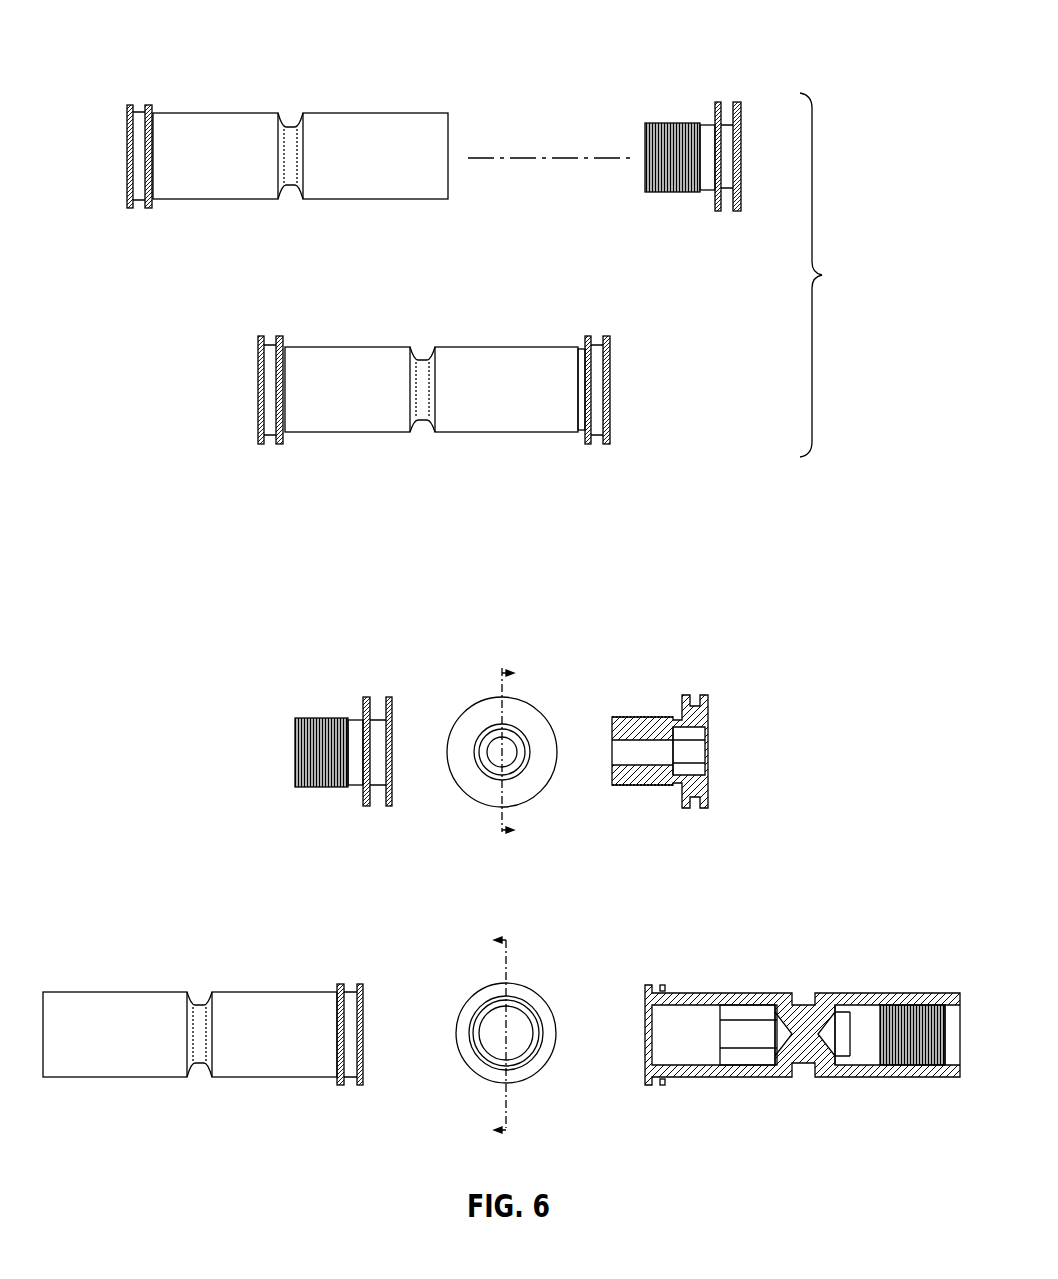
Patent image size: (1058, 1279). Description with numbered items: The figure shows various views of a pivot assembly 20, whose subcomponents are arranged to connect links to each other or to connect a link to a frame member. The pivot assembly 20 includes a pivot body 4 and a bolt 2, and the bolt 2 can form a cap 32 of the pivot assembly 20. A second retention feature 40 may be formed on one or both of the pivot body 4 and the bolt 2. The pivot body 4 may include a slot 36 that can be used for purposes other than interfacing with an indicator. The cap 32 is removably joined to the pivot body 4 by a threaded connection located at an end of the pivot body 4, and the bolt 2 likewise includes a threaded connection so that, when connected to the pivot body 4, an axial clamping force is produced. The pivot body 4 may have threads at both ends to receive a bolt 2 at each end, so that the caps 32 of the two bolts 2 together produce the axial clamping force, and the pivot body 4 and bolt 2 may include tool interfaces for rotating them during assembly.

The bolt 2 is at (692, 74).
The pivot body 4 is at (355, 69).
The pivot assembly 20 is at (858, 264).
The cap 32 is at (388, 808).
The slot 36 is at (292, 124).
The second retention feature 40 is at (138, 103).